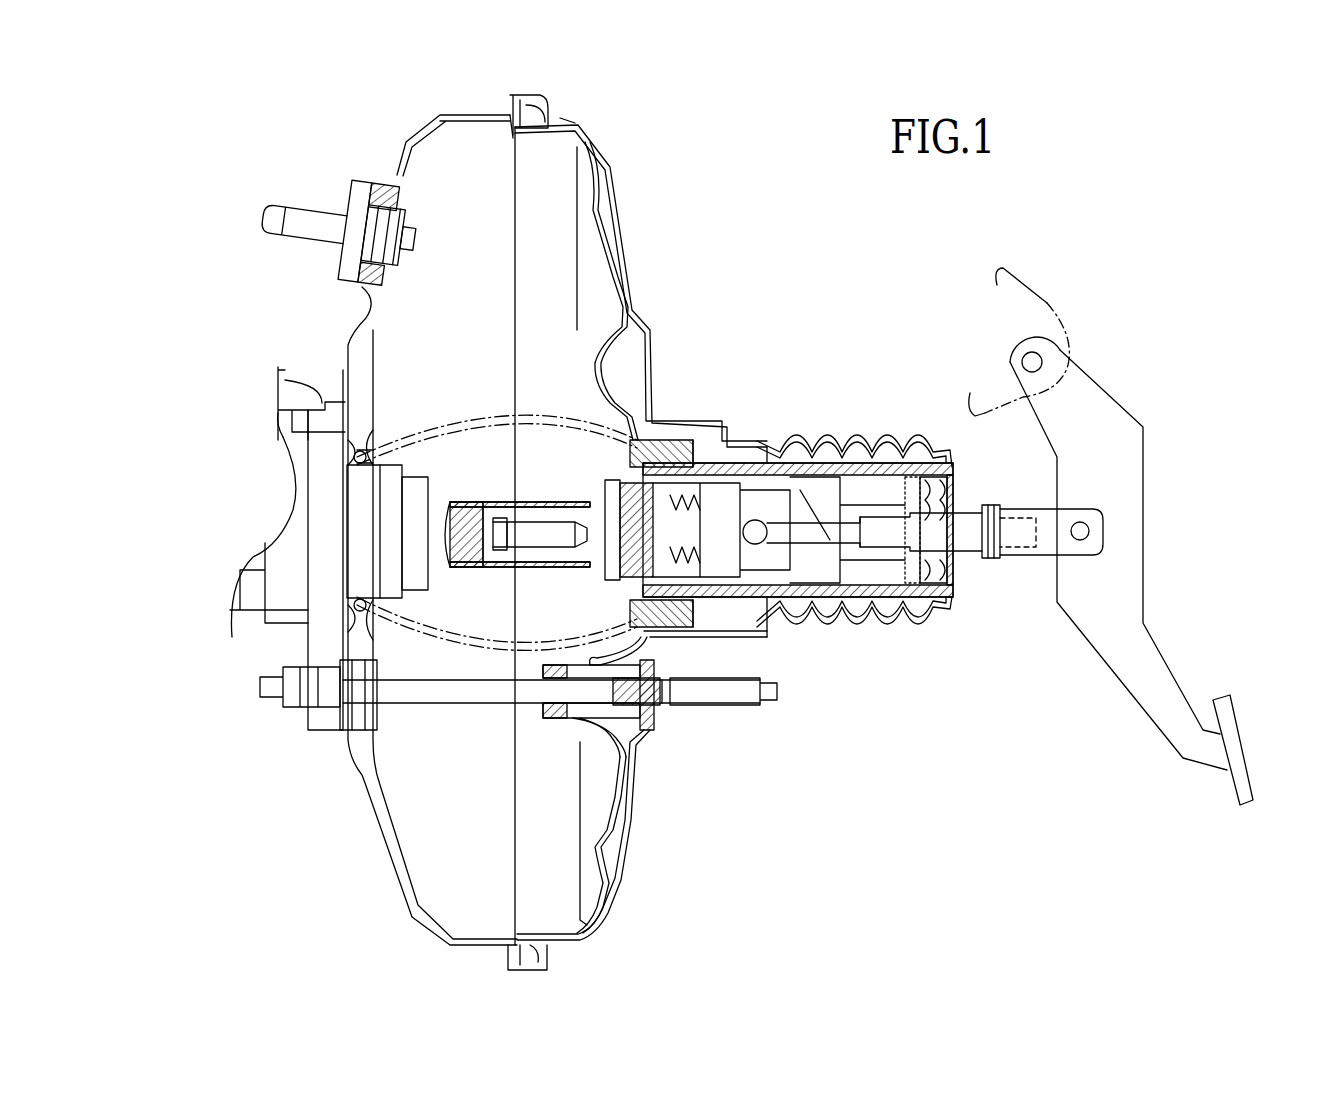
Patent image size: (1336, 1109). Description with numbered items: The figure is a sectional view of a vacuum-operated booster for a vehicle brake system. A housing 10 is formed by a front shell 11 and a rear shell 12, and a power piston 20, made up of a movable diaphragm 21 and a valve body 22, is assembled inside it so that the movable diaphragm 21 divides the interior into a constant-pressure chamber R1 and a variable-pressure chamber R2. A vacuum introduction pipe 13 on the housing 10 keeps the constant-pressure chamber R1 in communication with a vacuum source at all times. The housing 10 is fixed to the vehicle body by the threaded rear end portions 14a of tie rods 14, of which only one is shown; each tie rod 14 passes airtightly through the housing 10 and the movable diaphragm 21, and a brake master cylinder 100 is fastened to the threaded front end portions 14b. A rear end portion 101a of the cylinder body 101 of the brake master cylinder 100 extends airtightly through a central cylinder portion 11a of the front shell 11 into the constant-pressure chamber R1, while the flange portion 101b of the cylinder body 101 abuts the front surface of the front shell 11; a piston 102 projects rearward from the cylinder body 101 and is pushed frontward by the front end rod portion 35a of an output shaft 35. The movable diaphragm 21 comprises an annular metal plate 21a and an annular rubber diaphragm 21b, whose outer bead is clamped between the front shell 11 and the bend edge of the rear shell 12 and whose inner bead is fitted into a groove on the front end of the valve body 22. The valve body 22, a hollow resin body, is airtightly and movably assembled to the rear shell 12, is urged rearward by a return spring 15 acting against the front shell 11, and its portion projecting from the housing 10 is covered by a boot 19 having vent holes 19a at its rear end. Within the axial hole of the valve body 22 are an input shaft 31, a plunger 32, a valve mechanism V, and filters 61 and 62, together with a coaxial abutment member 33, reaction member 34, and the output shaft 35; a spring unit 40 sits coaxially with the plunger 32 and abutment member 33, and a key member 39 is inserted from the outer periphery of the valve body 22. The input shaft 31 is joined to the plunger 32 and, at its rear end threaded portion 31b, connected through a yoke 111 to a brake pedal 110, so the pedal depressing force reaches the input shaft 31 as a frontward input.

The housing 10 is at (562, 120).
The front shell 11 is at (398, 162).
The central cylinder portion 11a is at (388, 455).
The rear shell 12 is at (612, 155).
The vacuum introduction pipe 13 is at (303, 233).
The tie rod 14 is at (433, 702).
The threaded rear end portion 14a is at (715, 697).
The threaded front end portion 14b is at (270, 707).
The return spring 15 is at (350, 375).
The boot 19 is at (850, 620).
The vent holes 19a is at (947, 585).
The power piston 20 is at (699, 446).
The movable diaphragm 21 is at (610, 177).
The annular metal plate 21a is at (597, 367).
The annular rubber diaphragm 21b is at (620, 397).
The valve body 22 is at (867, 467).
The input shaft 31 is at (930, 533).
The rear end threaded portion 31b is at (1015, 560).
The plunger 32 is at (733, 497).
The abutment member 33 is at (623, 543).
The reaction member 34 is at (623, 490).
The output shaft 35 is at (520, 537).
The front end rod portion 35a is at (473, 532).
The key member 39 is at (733, 580).
The spring unit 40 is at (703, 580).
The filter 61 is at (907, 583).
The filter 62 is at (933, 583).
The brake master cylinder 100 is at (330, 603).
The cylinder body 101 is at (290, 525).
The rear end portion 101a is at (393, 503).
The flange portion 101b is at (313, 643).
The piston 102 is at (540, 502).
The brake pedal 110 is at (1135, 585).
The yoke 111 is at (1047, 517).
The constant-pressure chamber R1 is at (463, 173).
The variable-pressure chamber R2 is at (617, 243).
The valve mechanism V is at (780, 583).